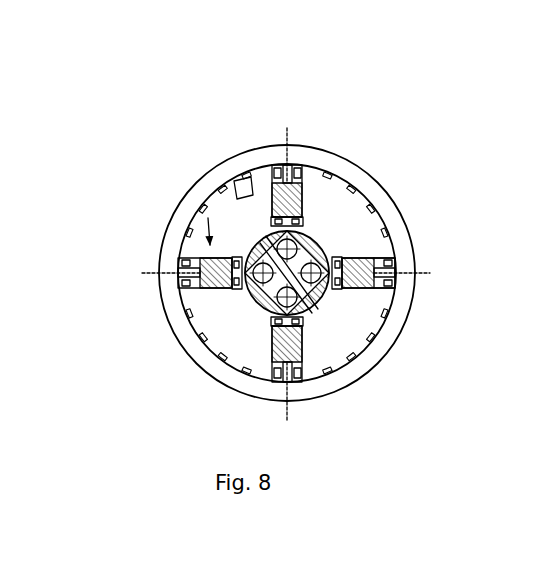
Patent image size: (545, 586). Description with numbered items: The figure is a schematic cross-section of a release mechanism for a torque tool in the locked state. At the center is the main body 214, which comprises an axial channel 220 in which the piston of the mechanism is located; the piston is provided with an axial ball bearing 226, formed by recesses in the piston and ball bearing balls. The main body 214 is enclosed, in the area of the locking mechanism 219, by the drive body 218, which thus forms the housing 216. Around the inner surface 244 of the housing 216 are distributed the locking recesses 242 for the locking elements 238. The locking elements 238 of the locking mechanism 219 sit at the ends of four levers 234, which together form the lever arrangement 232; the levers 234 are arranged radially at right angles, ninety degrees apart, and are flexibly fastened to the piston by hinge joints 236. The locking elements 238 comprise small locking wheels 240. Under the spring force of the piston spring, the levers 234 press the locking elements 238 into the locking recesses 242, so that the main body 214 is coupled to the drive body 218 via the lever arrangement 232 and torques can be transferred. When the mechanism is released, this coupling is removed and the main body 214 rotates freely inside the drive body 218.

The main body 214 is at (337, 273).
The housing 216 is at (287, 240).
The drive body 218 is at (291, 318).
The locking mechanism 219 is at (156, 205).
The axial channel 220 is at (351, 222).
The axial ball bearing 226 is at (355, 205).
The lever arrangement 232 is at (432, 242).
The lever 234 is at (240, 325).
The hinge joint 236 is at (276, 283).
The locking element 238 is at (285, 295).
The locking wheel 240 is at (178, 344).
The locking recess 242 is at (391, 174).
The inner surface 244 is at (209, 160).